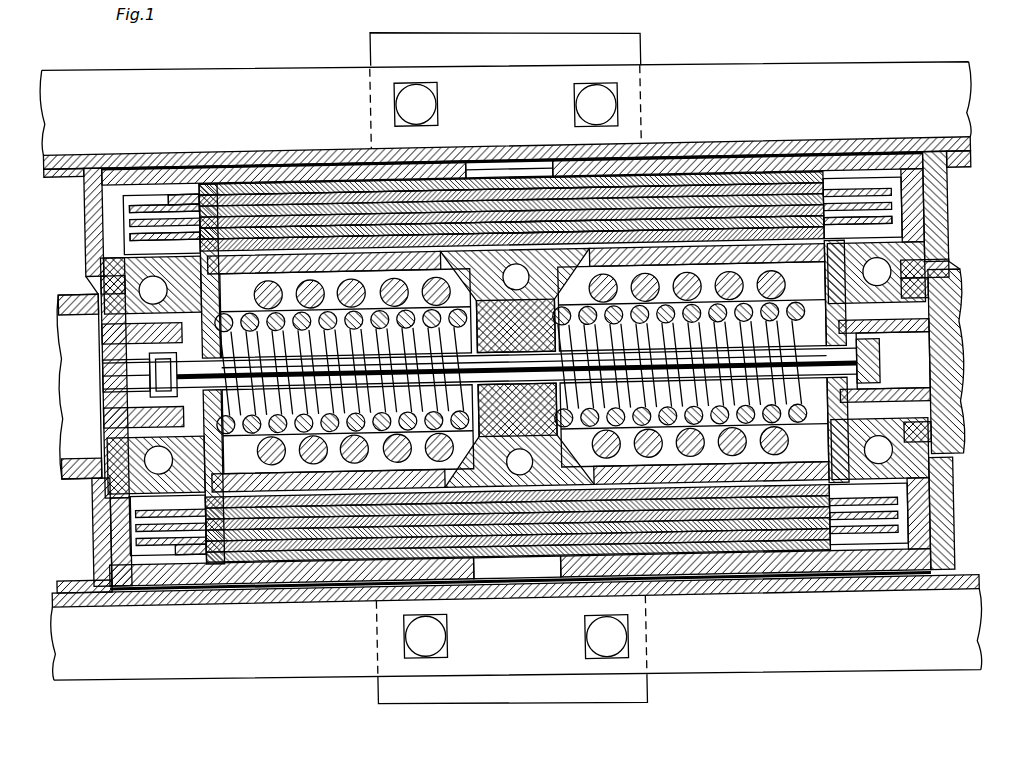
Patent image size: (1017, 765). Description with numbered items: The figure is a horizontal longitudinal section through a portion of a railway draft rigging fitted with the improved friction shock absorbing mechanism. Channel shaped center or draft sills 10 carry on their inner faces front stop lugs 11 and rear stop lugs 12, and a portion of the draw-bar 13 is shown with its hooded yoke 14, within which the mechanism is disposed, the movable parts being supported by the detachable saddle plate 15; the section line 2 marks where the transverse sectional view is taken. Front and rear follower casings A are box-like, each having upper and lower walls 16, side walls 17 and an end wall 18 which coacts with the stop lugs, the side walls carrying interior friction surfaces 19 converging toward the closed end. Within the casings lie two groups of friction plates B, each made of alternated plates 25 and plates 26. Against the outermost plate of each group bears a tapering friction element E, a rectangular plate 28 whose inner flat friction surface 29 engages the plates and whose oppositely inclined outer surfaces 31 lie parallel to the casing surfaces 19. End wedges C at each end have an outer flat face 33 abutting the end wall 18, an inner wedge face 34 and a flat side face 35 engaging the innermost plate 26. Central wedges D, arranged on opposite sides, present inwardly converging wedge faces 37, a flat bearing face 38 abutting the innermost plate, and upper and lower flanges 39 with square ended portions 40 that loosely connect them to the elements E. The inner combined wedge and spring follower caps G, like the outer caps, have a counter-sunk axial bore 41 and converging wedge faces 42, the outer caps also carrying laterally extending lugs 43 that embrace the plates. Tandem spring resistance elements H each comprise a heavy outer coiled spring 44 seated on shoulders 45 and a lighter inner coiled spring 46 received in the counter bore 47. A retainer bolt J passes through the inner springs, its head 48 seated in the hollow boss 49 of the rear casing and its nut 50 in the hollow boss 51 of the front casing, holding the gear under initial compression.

The section line 2— 2 is at (222, 143).
The center or draft sills 10 is at (975, 153).
The front stop lugs 11 is at (88, 206).
The rear stop lugs 12 is at (927, 206).
The draw-bar 13 is at (79, 386).
The hooded yoke 14 is at (962, 372).
The saddle plate 15 is at (477, 703).
The upper and lower walls 16 is at (152, 192).
The side walls 17 is at (293, 168).
The end wall 18 is at (90, 478).
The friction surfaces 19 is at (340, 186).
The friction plates 25 is at (890, 205).
The friction plates 26 is at (160, 228).
The rectangular plate 28 is at (483, 162).
The inner flat friction surface 29 is at (540, 224).
The inclined surfaces 31 is at (372, 186).
The outer flat face 33 is at (103, 272).
The inner wedge face 34 is at (110, 326).
The flat side face 35 is at (966, 488).
The wedge faces 37 is at (522, 439).
The flat bearing face 38 is at (556, 176).
The upper and lower flanges 39 is at (515, 236).
The square ended portions 40 is at (426, 578).
The counter-sunk axial bore 41 is at (520, 473).
The converging wedge faces 42 is at (480, 368).
The laterally extending lugs 43 is at (215, 215).
The outer coiled spring 44 is at (515, 260).
The shoulders 45 is at (262, 300).
The inner coiled spring 46 is at (521, 367).
The counter bore 47 is at (86, 421).
The head 48 is at (893, 360).
The hollow boss 49 is at (930, 332).
The nut 50 is at (127, 389).
The hollow boss 51 is at (110, 356).
The follower casings A is at (246, 200).
The friction plates B is at (130, 226).
The end wedges C is at (516, 368).
The central wedges D is at (517, 367).
The tapering friction elements E is at (486, 166).
The inner combined wedge and spring follower caps G is at (524, 368).
The spring resistance elements H is at (524, 367).
The retainer bolt J is at (150, 375).